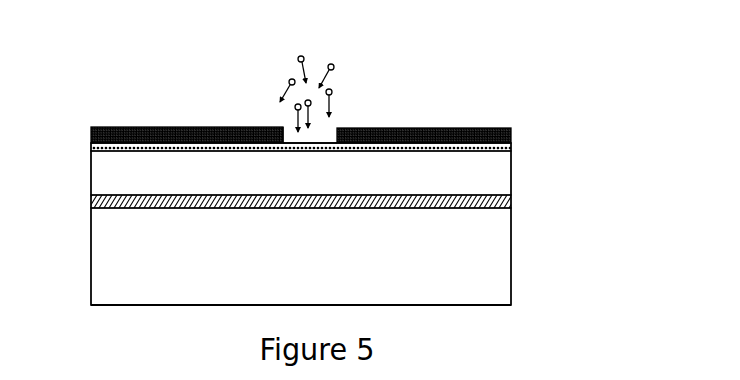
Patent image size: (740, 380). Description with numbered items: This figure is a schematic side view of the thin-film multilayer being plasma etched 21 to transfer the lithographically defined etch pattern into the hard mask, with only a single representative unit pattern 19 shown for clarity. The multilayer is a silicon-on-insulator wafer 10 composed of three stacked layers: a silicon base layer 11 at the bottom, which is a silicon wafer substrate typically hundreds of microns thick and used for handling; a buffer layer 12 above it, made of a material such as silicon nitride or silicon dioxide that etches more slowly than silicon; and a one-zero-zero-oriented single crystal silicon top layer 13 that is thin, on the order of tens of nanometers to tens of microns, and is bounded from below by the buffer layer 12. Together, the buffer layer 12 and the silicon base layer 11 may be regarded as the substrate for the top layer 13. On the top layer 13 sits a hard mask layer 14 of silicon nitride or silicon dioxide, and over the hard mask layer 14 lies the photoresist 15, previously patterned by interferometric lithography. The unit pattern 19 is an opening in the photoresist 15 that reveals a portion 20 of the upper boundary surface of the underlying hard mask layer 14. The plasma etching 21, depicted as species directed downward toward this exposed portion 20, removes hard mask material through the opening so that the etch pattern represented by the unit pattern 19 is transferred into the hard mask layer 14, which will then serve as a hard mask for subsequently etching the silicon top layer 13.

The SOI wafer 10 is at (513, 151).
The silicon base layer 11 is at (91, 258).
The buffer layer 12 is at (91, 203).
The single crystal silicon top layer 13 is at (91, 173).
The hard mask layer 14 is at (511, 148).
The photoresist 15 is at (511, 137).
The unit pattern 19 is at (283, 128).
The portion of upper boundary surface of hard mask layer 20 is at (327, 141).
The plasma etching 21 is at (268, 56).